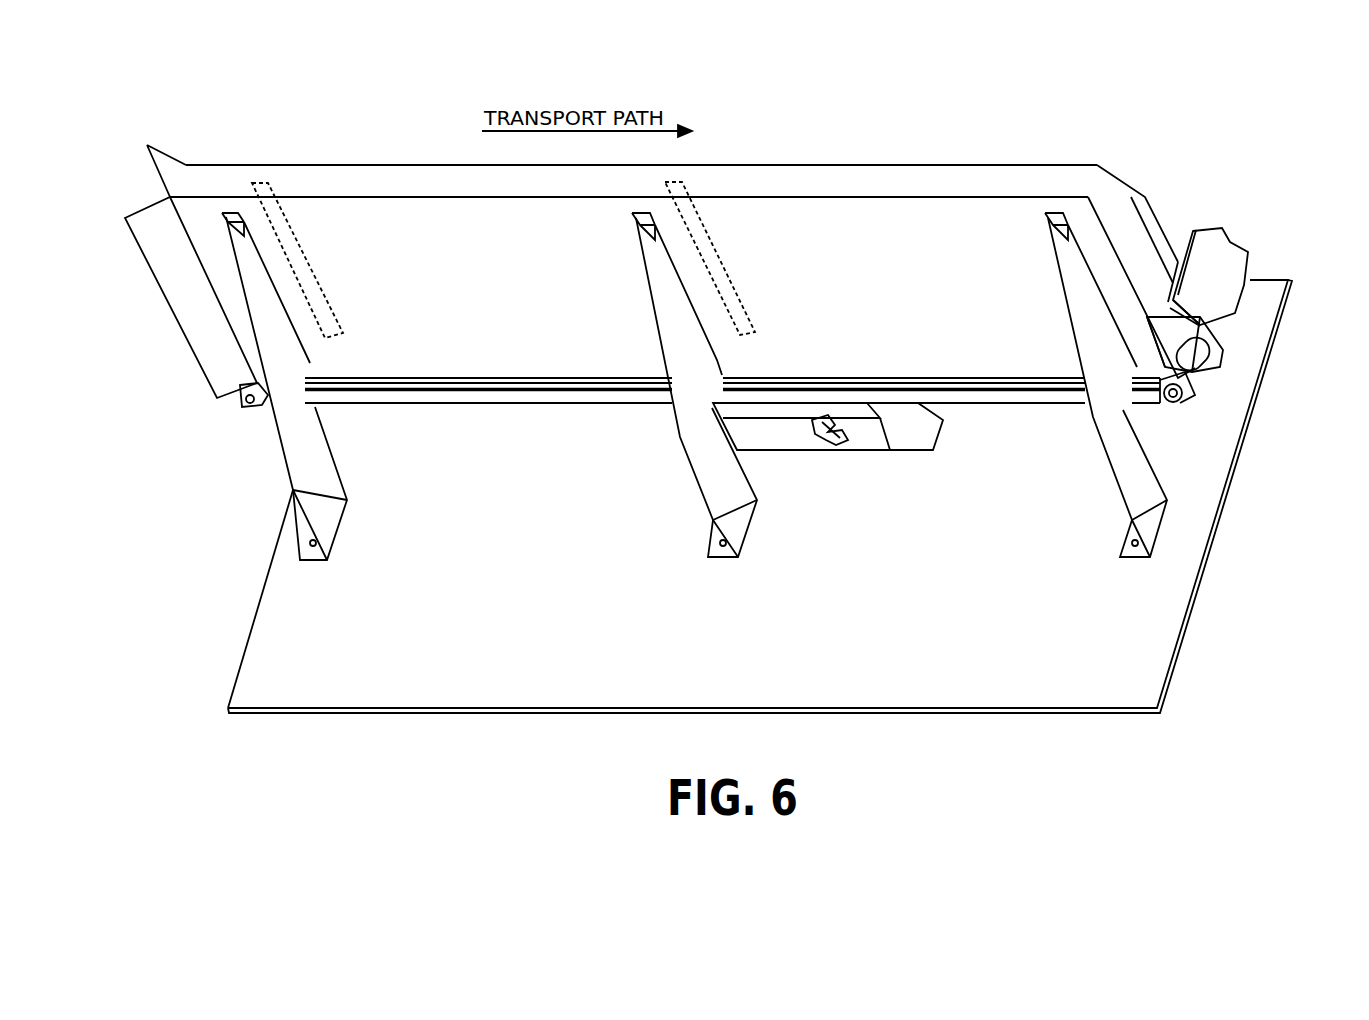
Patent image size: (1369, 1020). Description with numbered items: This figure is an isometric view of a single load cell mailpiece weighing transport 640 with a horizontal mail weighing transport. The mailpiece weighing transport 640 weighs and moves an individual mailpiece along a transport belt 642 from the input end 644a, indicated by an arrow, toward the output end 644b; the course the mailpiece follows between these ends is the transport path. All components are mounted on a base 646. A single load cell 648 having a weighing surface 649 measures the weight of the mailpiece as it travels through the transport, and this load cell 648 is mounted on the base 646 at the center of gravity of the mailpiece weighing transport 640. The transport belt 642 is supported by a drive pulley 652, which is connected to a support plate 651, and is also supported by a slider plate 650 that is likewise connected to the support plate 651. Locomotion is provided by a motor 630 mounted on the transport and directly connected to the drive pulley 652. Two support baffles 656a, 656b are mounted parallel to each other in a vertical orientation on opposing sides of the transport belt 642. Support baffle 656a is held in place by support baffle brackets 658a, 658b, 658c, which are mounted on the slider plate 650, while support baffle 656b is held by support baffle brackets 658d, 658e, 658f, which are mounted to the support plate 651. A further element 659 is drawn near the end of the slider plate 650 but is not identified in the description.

The mailpiece weighing transport 640 is at (862, 131).
The input end 644a is at (133, 195).
The output end 644b is at (1170, 226).
The support baffle 656a is at (462, 163).
The support baffle 656b is at (445, 196).
The support baffle bracket 658a is at (1088, 343).
The support baffle bracket 658b is at (703, 350).
The support baffle bracket 658c is at (283, 343).
The support baffle bracket 658d is at (1133, 193).
The support baffle bracket 658e is at (740, 294).
The support baffle bracket 658f is at (325, 290).
The bearing bracket 659 is at (240, 395).
The slider plate 650 is at (1003, 393).
The load cell 648 is at (902, 437).
The weighing surface 649 is at (787, 408).
The base 646 is at (1160, 612).
The motor 630 is at (1232, 240).
The support plate 651 is at (1213, 330).
The transport belt 642 is at (1195, 395).
The drive pulley 652 is at (1166, 410).